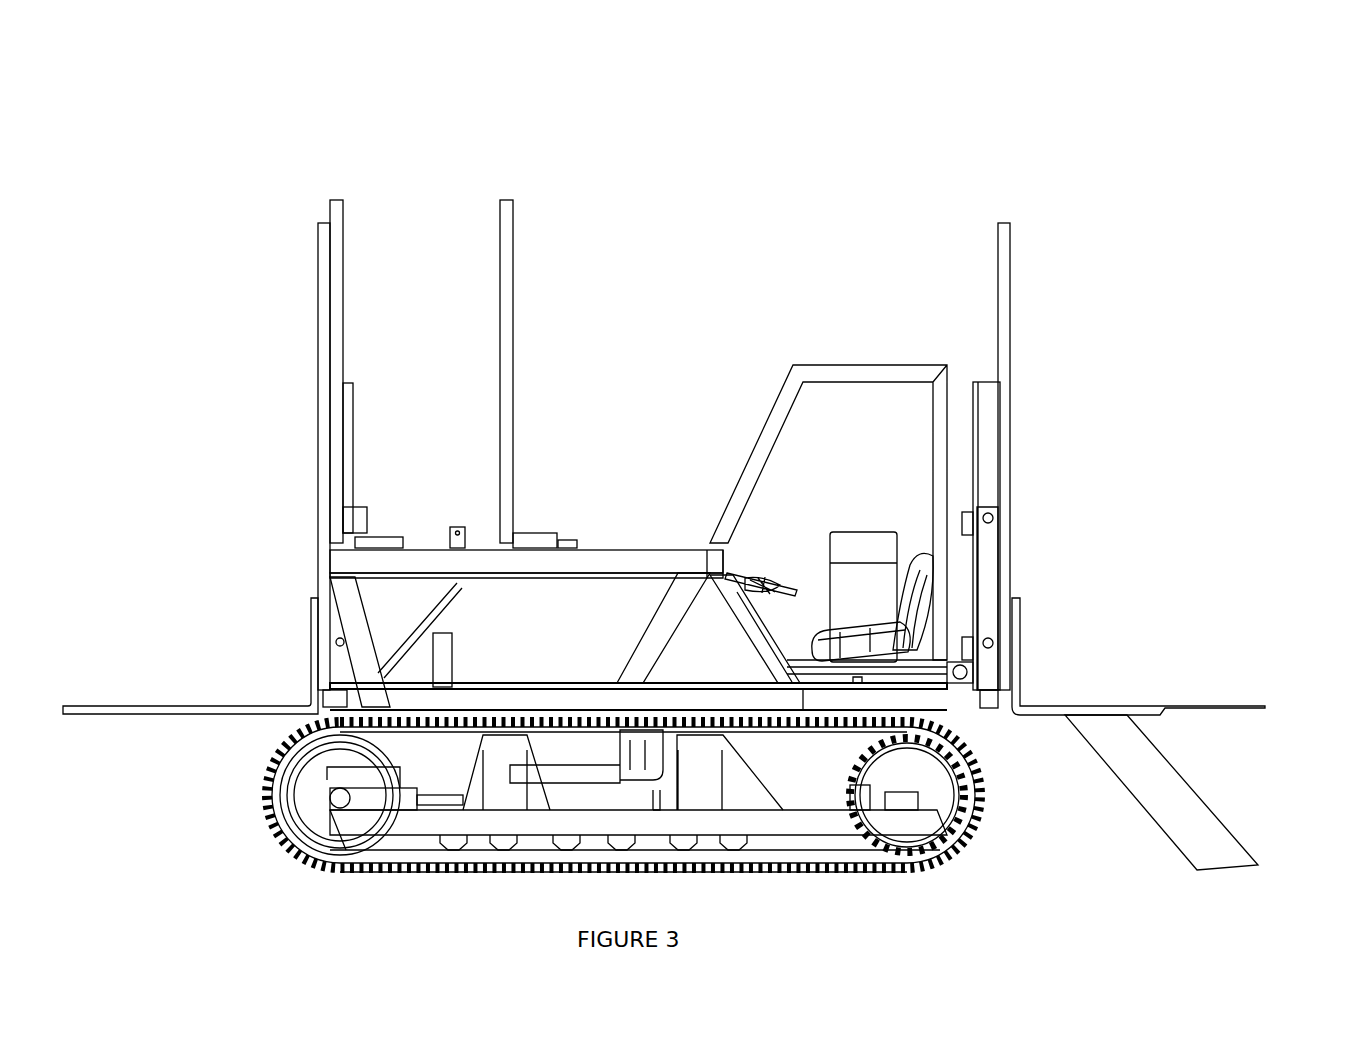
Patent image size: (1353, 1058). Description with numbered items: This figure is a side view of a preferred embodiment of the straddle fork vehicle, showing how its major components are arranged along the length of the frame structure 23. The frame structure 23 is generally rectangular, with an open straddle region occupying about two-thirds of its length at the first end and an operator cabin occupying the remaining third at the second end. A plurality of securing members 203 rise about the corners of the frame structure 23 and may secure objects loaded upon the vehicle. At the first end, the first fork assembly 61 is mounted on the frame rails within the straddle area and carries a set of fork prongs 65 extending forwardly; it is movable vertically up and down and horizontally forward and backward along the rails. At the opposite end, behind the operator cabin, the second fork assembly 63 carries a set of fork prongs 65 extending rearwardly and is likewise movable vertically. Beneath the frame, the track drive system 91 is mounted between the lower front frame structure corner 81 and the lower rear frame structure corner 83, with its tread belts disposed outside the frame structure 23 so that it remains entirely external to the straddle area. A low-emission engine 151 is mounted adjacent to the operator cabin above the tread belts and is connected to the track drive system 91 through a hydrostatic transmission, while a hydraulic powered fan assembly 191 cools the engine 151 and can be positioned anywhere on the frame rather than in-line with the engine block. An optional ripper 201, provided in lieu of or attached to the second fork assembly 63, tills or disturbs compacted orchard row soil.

The frame structure 23 is at (624, 563).
The first fork assembly 61 is at (321, 444).
The second fork assembly 63 is at (987, 574).
The fork prongs 65 is at (218, 718).
The lower front frame structure corner 81 is at (349, 615).
The lower rear frame structure corner 83 is at (940, 704).
The track drive system 91 is at (396, 826).
The low-emission engine 151 is at (824, 597).
The hydraulic powered fan assembly 191 is at (866, 554).
The ripper 201 is at (1210, 801).
The securing members 203 is at (505, 197).